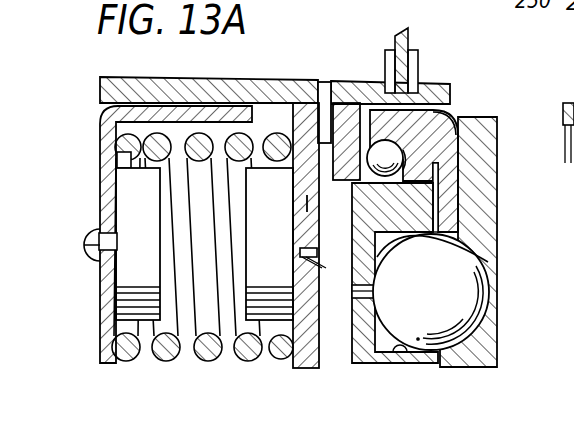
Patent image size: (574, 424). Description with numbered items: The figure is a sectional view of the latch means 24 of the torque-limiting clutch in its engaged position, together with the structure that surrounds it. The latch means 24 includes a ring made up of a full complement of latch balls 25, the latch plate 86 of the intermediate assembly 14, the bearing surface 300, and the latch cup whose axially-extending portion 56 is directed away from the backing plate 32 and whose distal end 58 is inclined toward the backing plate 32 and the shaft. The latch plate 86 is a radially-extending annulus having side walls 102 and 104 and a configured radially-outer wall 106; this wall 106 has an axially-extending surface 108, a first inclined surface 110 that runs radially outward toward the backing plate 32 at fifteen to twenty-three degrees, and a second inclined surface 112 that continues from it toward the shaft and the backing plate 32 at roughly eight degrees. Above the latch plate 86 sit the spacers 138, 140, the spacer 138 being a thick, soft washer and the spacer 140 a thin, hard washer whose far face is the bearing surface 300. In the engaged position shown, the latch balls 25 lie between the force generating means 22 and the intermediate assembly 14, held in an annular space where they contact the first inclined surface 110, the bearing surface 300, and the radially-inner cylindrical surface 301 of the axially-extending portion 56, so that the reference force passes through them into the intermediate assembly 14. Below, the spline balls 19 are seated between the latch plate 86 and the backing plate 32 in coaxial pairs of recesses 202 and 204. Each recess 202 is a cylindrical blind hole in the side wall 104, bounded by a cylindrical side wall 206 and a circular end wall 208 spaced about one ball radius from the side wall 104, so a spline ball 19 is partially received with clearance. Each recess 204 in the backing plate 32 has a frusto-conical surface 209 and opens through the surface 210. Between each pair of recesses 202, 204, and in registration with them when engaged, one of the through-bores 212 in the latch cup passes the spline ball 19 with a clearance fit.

The means for generating a reference force 22 is at (266, 128).
The latch means 24 is at (416, 103).
The latch balls 25 is at (389, 140).
The axially-extending portion 56 is at (393, 140).
The bearing surface 300 is at (388, 135).
The radially-inner cylindrical surface 301 is at (398, 135).
The spacer 138 is at (319, 82).
The spacer 140 is at (367, 103).
The radially-outer wall 106 is at (438, 128).
The second inclined surface 112 is at (432, 118).
The side wall 104 is at (438, 203).
The first inclined surface 110 is at (410, 157).
The backing plate 32 is at (497, 120).
The surface 210 is at (462, 238).
The cylindrical side wall 206 is at (475, 262).
The recesses 204 is at (492, 278).
The frusto-conical surface 209 is at (497, 307).
The through-bores 212 is at (426, 354).
The recesses 202 is at (408, 364).
The side wall 102 is at (352, 300).
The spline balls 19 is at (473, 366).
The latch plate 86 is at (311, 366).
The distal end 58 is at (293, 182).
The axially-extending surface 108 is at (307, 203).
The intermediate assembly 14 is at (319, 257).
The circular end wall 208 is at (277, 333).